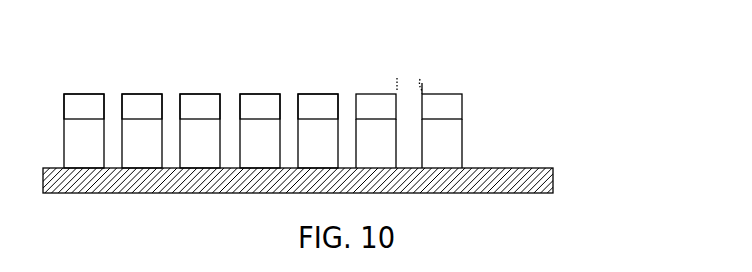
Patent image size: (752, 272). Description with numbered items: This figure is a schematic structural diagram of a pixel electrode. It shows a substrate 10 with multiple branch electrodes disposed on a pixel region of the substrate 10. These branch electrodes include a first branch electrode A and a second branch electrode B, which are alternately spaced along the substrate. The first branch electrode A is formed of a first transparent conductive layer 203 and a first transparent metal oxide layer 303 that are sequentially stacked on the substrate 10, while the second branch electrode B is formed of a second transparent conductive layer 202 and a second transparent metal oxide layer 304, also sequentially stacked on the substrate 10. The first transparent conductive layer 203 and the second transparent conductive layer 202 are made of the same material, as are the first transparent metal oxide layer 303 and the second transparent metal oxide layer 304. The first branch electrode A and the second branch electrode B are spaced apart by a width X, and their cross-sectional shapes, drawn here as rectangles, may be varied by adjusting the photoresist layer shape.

The substrate 10 is at (553, 182).
The second transparent conductive layer 202 is at (455, 148).
The first transparent conductive layer 203 is at (362, 142).
The first transparent metal oxide layer 303 is at (365, 95).
The second transparent metal oxide layer 304 is at (463, 93).
The first branch electrode A is at (380, 30).
The second branch electrode B is at (575, 63).
The width X is at (409, 77).